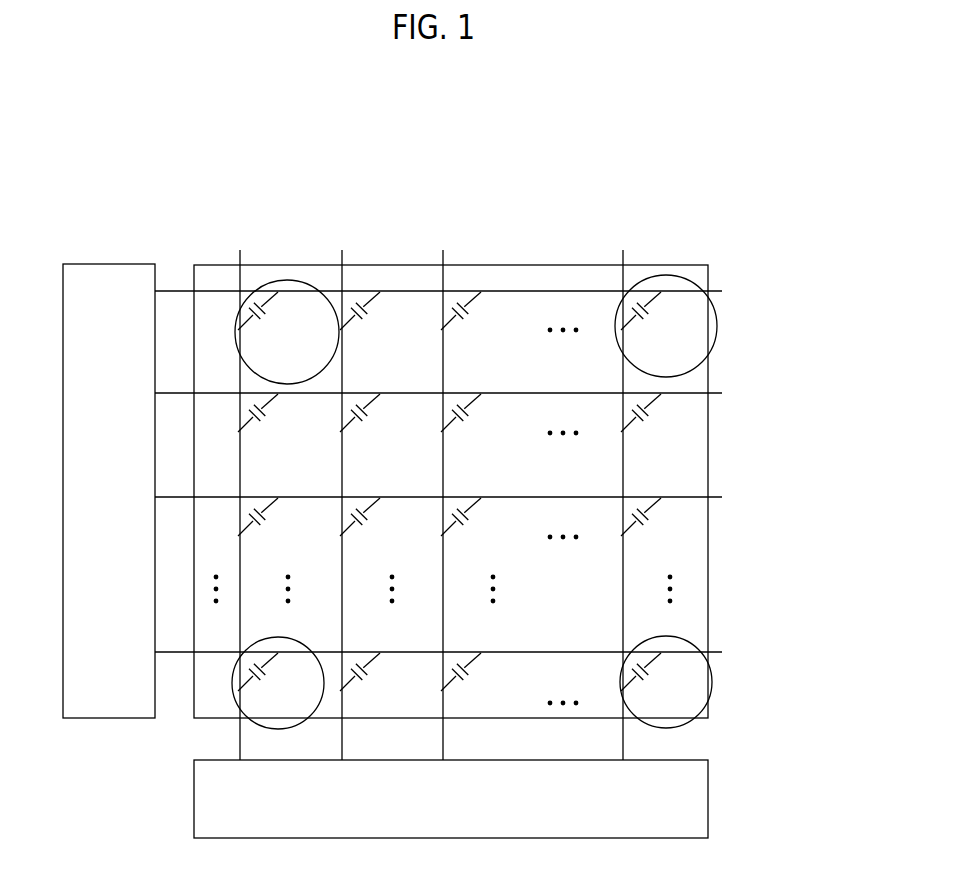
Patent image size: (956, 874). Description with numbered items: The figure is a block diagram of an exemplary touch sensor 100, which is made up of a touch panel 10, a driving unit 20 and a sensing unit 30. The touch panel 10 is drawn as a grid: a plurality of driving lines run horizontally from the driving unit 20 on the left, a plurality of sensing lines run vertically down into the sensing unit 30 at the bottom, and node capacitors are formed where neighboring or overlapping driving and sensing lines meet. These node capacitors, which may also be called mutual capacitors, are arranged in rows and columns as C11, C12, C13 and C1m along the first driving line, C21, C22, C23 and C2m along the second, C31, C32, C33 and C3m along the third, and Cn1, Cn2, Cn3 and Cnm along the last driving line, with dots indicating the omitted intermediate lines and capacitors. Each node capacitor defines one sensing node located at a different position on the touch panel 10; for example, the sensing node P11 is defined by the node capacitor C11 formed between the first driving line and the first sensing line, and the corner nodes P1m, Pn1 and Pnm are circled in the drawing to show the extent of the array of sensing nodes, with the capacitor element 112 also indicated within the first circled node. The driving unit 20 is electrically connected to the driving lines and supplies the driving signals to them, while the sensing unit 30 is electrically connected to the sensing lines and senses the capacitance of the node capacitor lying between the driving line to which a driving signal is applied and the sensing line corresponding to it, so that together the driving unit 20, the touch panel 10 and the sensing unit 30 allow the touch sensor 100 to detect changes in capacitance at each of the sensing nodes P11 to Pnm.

The touch sensor 100 is at (632, 157).
The touch panel 10 is at (470, 469).
The driving unit 20 is at (108, 247).
The sensing unit 30 is at (708, 800).
The sensing capacitor 112 is at (260, 328).
The sensing node P11 is at (282, 280).
The sensing node P1m is at (717, 336).
The sensing node Pn1 is at (232, 673).
The sensing node Pnm is at (712, 697).
The node capacitor C11 is at (269, 313).
The node capacitor C12 is at (372, 313).
The node capacitor C13 is at (473, 313).
The node capacitor C1m is at (656, 313).
The node capacitor C21 is at (269, 415).
The node capacitor C22 is at (372, 415).
The node capacitor C23 is at (473, 415).
The node capacitor C2m is at (656, 415).
The node capacitor C31 is at (269, 519).
The node capacitor C32 is at (372, 519).
The node capacitor C33 is at (473, 519).
The node capacitor C3m is at (656, 519).
The node capacitor Cn1 is at (270, 674).
The node capacitor Cn2 is at (372, 674).
The node capacitor Cn3 is at (473, 674).
The node capacitor Cnm is at (656, 674).